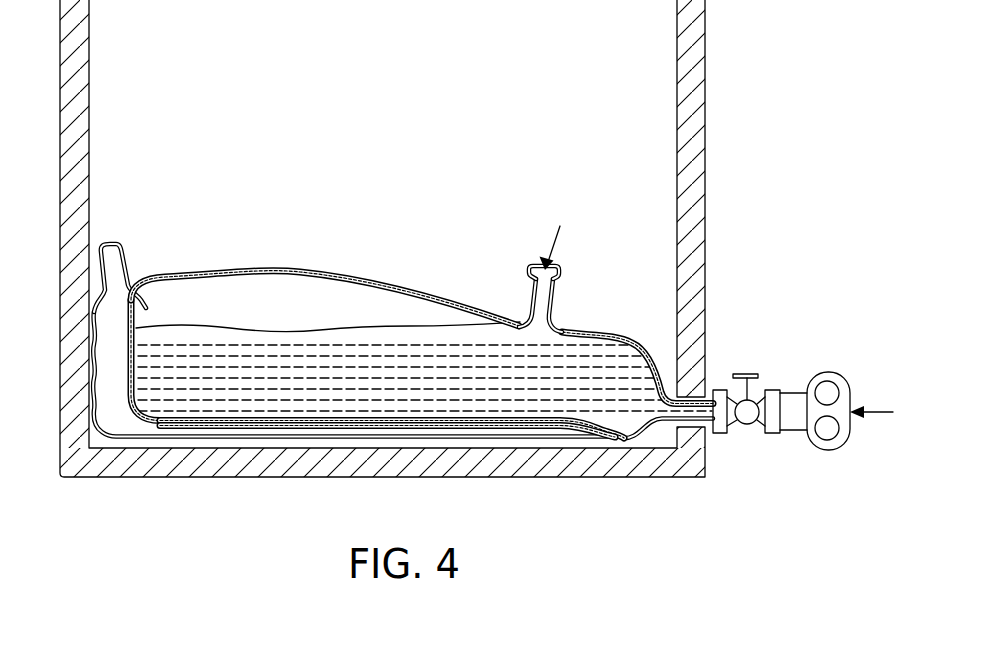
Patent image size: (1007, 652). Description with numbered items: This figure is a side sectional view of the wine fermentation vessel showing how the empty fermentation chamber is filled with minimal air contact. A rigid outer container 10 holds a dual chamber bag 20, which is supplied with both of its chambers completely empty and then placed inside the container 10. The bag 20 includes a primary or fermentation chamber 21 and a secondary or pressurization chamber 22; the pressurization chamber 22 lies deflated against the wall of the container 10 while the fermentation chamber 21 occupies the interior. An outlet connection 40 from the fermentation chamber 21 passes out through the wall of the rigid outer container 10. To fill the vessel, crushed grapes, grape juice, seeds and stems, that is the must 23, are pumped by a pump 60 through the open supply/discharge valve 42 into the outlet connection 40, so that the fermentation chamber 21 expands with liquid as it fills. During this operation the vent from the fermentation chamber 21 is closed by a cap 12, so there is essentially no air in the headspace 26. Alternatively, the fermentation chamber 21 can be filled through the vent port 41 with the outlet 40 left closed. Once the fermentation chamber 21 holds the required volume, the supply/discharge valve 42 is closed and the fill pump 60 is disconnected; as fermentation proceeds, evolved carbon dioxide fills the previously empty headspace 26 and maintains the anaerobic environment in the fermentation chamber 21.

The rigid outer container 10 is at (705, 23).
The cap 12 is at (561, 227).
The dual chamber bag 20 is at (360, 333).
The fermentation chamber 21 is at (600, 357).
The pressurization chamber 22 is at (100, 289).
The fermenting must 23 is at (587, 390).
The headspace 26 is at (294, 296).
The outlet connection 40 is at (759, 420).
The vent port 41 is at (553, 297).
The supply/discharge valve 42 is at (748, 424).
The pump 60 is at (825, 450).